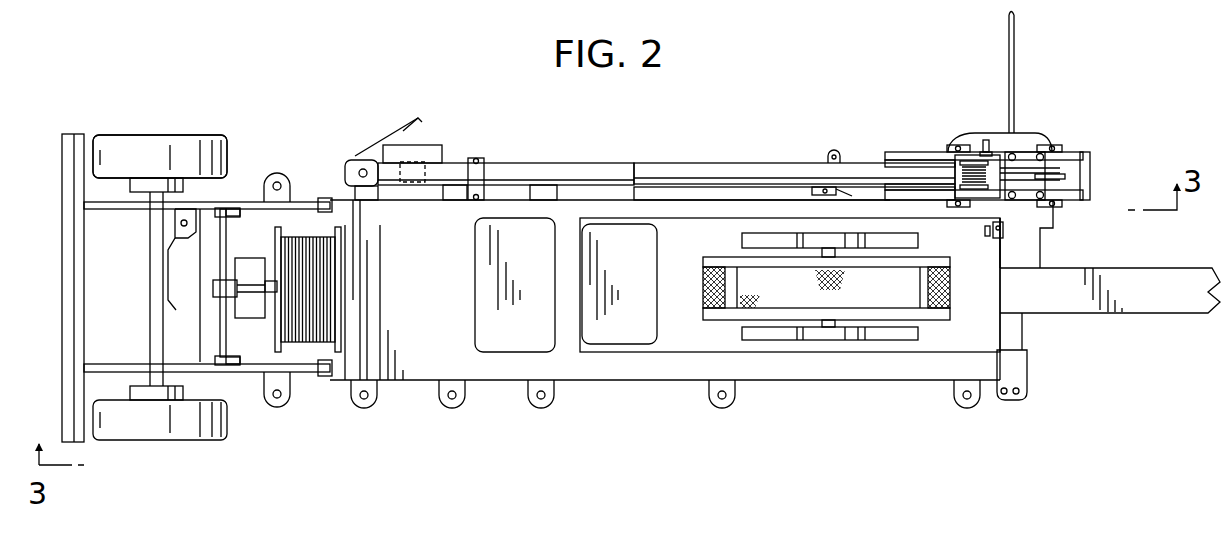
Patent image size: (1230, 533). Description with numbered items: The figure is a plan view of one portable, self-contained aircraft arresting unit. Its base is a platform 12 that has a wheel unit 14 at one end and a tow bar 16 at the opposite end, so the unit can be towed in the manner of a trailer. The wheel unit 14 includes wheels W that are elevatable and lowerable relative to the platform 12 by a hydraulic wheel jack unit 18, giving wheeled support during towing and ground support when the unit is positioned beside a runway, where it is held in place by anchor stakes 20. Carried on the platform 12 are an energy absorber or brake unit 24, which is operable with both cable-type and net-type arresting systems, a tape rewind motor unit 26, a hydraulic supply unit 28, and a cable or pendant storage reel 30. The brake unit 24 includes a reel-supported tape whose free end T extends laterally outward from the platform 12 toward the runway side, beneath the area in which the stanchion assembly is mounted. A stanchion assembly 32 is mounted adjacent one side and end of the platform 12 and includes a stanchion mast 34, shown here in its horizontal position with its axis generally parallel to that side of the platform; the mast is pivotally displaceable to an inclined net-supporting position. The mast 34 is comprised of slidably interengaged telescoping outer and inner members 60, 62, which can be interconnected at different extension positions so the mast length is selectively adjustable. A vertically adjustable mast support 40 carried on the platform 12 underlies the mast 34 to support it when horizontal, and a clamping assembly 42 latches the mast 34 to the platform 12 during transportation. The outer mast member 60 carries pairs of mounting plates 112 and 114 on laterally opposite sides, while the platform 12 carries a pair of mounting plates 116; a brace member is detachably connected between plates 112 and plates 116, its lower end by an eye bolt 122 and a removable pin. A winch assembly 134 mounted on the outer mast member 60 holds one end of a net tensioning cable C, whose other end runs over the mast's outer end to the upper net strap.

The platform 12 is at (425, 386).
The wheel unit 14 is at (156, 444).
The tow bar 16 is at (1192, 282).
The hydraulic wheel jack unit 18 is at (213, 290).
The anchor stakes 20 is at (277, 404).
The energy absorber or brake unit 24 is at (775, 312).
The tape rewind motor unit 26 is at (634, 347).
The hydraulic supply unit 28 is at (503, 344).
The cable or pendant storage reel 30 is at (333, 322).
The stanchion assembly 32 is at (1073, 150).
The stanchion mast 34 is at (856, 161).
The vertically adjustable mast support 40 is at (430, 148).
The clamping assembly 42 is at (486, 160).
The outer mast member 60 is at (757, 163).
The inner mast member 62 is at (589, 162).
The mounting plates 112 is at (818, 192).
The mounting plates 114 is at (826, 152).
The mounting plates 116 is at (1005, 231).
The eye bolt 122 is at (993, 244).
The winch assembly 134 is at (977, 150).
The wheels W is at (154, 150).
The net tensioning cable C is at (398, 126).
The tape free end T is at (1015, 55).